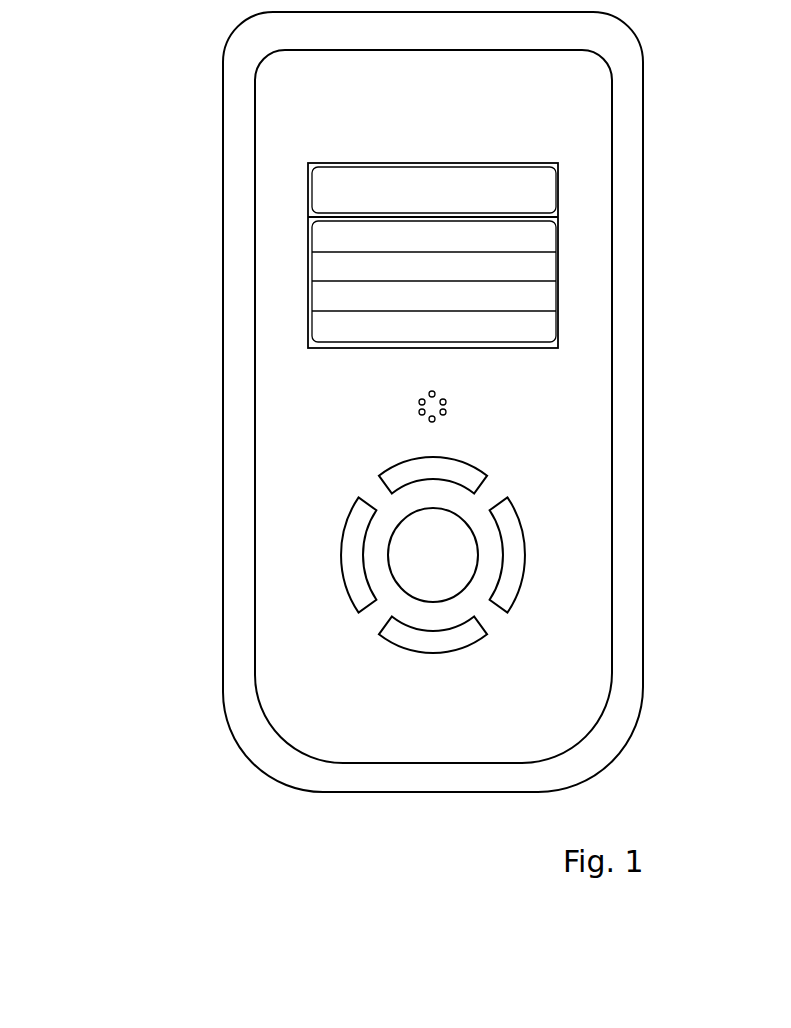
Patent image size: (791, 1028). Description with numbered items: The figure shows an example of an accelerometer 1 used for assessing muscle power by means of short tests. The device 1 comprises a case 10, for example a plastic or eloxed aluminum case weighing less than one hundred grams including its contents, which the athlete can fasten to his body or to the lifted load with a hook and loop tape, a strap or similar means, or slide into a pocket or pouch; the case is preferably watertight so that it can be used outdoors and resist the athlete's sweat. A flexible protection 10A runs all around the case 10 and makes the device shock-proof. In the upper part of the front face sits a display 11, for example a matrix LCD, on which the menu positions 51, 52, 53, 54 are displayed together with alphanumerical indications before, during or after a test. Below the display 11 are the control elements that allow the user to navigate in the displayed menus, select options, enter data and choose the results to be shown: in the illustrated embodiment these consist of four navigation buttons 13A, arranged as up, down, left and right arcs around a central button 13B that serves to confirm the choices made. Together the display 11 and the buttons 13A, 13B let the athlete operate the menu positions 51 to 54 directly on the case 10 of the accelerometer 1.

The accelerometer 1 is at (127, 733).
The case 10 is at (293, 535).
The flexible protection 10A is at (240, 590).
The display 11 is at (558, 343).
The navigation buttons 13A is at (437, 468).
The confirmation button 13B is at (433, 555).
The menu position 51 is at (316, 241).
The menu position 52 is at (316, 268).
The menu position 53 is at (316, 297).
The menu position 54 is at (316, 325).